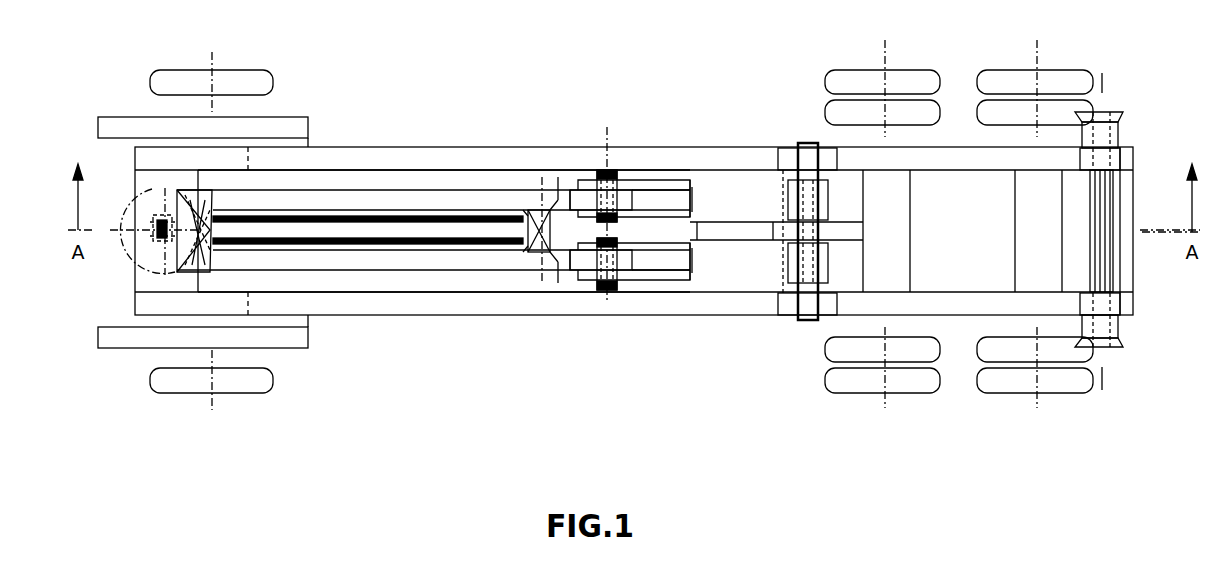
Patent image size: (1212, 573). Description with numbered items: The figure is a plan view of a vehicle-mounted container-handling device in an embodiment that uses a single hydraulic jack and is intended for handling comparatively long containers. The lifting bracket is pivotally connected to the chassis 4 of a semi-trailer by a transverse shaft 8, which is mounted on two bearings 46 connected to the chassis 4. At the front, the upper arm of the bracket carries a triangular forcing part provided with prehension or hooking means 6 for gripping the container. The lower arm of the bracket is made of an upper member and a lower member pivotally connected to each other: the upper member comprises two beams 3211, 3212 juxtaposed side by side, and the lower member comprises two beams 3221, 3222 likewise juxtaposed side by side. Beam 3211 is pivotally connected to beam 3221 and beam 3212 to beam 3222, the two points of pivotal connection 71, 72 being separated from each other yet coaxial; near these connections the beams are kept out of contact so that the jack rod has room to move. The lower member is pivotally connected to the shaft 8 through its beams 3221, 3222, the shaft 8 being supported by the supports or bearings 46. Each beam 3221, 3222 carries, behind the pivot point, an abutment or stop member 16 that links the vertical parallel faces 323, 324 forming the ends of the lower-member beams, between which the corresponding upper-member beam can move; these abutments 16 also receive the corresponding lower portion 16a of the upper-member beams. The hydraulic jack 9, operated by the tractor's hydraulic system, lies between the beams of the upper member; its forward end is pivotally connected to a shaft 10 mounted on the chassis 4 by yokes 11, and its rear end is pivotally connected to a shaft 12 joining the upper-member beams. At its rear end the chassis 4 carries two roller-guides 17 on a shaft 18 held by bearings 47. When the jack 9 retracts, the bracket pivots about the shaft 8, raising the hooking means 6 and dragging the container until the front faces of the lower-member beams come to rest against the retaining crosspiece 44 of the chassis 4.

The chassis 4 is at (142, 278).
The prehension or hooking means 6 is at (213, 213).
The shaft 8 is at (803, 320).
The hydraulic jack 9 is at (473, 230).
The shaft 10 is at (163, 213).
The yokes 11 is at (153, 237).
The shaft 12 is at (540, 267).
The abutment or stop member 16 is at (657, 175).
The lower portion 16a is at (557, 197).
The roller-guides 17 is at (1120, 127).
The shaft 18 is at (1100, 232).
The retaining crosspiece 44 is at (708, 173).
The bearings 46 is at (783, 157).
The bearings 47 is at (1113, 160).
The point of pivotal connection 71 is at (617, 170).
The point of pivotal connection 72 is at (607, 290).
The vertical parallel face 323 is at (637, 187).
The vertical parallel face 324 is at (652, 280).
The beam 3211 is at (423, 203).
The beam 3212 is at (405, 265).
The beam 3221 is at (750, 197).
The beam 3222 is at (737, 270).